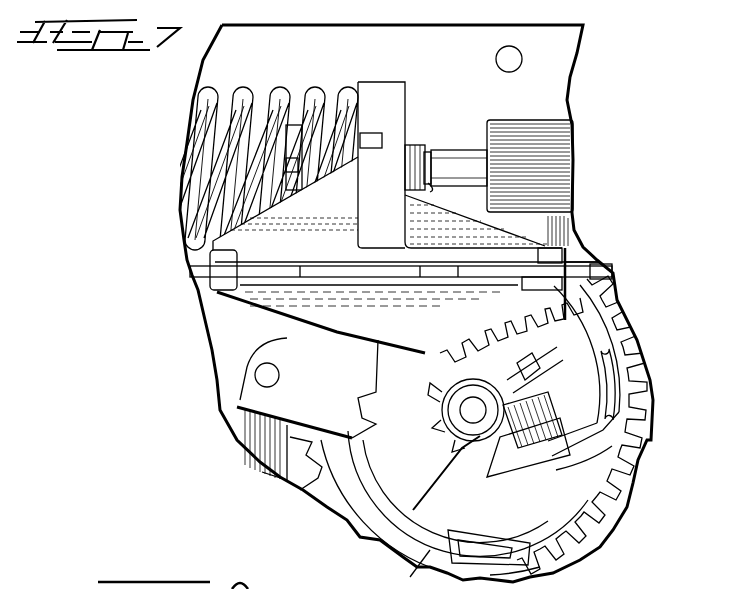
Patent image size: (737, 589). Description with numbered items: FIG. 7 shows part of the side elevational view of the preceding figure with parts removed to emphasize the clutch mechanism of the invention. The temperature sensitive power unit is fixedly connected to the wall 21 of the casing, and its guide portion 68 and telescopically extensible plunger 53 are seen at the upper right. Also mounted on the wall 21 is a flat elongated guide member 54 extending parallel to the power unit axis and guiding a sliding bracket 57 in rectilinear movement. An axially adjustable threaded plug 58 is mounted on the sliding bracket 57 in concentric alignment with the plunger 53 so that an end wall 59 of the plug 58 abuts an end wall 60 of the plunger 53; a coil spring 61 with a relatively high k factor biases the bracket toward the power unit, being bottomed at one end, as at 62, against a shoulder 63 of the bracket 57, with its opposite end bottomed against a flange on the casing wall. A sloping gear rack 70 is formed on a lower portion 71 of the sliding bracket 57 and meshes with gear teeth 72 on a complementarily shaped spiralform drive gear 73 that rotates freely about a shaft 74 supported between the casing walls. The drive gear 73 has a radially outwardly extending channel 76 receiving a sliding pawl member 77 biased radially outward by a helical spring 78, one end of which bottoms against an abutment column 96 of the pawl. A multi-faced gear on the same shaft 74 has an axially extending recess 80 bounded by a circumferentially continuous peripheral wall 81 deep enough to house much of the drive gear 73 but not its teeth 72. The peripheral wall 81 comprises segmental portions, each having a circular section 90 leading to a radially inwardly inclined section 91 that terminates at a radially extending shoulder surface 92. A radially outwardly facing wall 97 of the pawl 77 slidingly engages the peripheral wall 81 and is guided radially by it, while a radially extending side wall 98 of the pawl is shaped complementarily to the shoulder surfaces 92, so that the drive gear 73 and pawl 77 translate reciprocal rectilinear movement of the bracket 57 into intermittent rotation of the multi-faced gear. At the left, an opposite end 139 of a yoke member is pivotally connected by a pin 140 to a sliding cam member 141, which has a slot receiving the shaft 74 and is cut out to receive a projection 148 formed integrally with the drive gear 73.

The wall 21 is at (323, 483).
The plunger 53 is at (460, 150).
The guide member 54 is at (217, 295).
The sliding bracket 57 is at (210, 233).
The threaded plug 58 is at (415, 148).
The end wall 59 is at (432, 173).
The end wall 60 is at (428, 156).
The coil spring 61 is at (243, 88).
The spring end 62 is at (346, 92).
The shoulder 63 is at (354, 135).
The guide portion 68 is at (560, 125).
The gear rack 70 is at (603, 275).
The lower portion 71 is at (273, 293).
The gear teeth 72 is at (533, 340).
The drive gear 73 is at (555, 392).
The shaft 74 is at (473, 410).
The channel 76 is at (640, 433).
The pawl member 77 is at (637, 467).
The helical spring 78 is at (490, 470).
The recess 80 is at (383, 480).
The peripheral wall 81 is at (390, 523).
The circular section 90 is at (550, 517).
The inclined section 91 is at (545, 572).
The shoulder surface 92 is at (448, 535).
The abutment column 96 is at (563, 413).
The radially outwardly facing wall 97 is at (612, 462).
The side wall 98 is at (597, 420).
The opposite end 139 is at (240, 438).
The pin 140 is at (258, 374).
The cam member 141 is at (330, 345).
The projection 148 is at (482, 368).